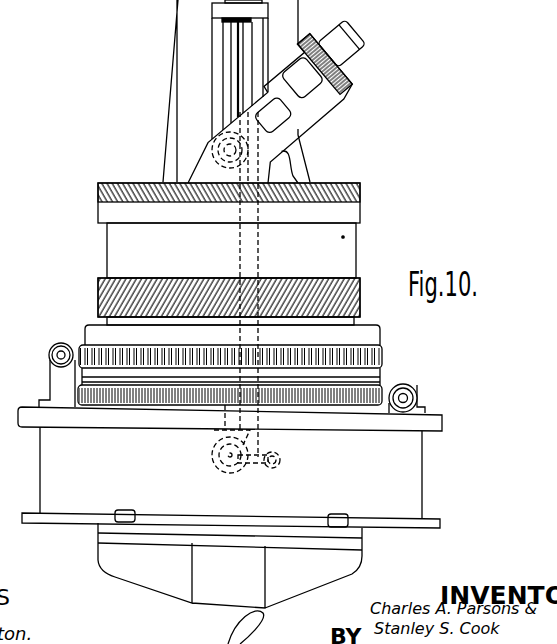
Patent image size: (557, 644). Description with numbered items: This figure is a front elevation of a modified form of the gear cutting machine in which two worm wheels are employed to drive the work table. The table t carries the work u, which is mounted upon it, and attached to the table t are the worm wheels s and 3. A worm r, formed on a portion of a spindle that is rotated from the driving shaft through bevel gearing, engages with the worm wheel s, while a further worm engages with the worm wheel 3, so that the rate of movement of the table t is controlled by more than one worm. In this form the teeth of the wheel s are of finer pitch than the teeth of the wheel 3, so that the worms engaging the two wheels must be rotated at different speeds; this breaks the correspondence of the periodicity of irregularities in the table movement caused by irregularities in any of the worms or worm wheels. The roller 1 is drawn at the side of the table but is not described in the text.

The roller 1 is at (50, 355).
The work u is at (362, 242).
The table t is at (365, 338).
The worm wheel 3 is at (383, 362).
The worm r is at (418, 400).
The worm wheel s is at (368, 407).